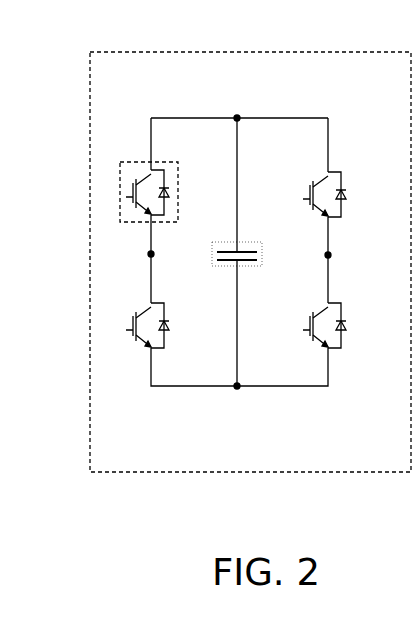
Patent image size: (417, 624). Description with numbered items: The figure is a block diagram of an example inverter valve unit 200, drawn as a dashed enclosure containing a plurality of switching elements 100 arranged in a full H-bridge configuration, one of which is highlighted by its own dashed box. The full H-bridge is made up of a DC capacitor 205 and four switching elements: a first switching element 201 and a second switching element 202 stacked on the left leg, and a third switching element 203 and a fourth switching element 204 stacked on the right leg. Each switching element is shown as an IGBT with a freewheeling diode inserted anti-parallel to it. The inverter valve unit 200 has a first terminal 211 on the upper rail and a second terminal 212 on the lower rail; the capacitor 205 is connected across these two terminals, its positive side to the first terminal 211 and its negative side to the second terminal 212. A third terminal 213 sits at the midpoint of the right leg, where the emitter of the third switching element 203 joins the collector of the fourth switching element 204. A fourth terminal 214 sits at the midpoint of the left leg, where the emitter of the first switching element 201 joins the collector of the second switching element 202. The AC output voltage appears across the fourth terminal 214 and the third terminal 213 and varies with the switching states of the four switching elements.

The switching element 100 is at (120, 164).
The inverter valve unit 200 is at (242, 52).
The switching element Q1 201 is at (93, 197).
The switching element Q2 202 is at (98, 325).
The switching element Q3 203 is at (304, 172).
The switching element Q4 204 is at (304, 308).
The DC capacitor 205 is at (232, 268).
The first terminal 211 is at (238, 116).
The second terminal 212 is at (236, 388).
The third terminal 213 is at (330, 254).
The fourth terminal 214 is at (152, 252).